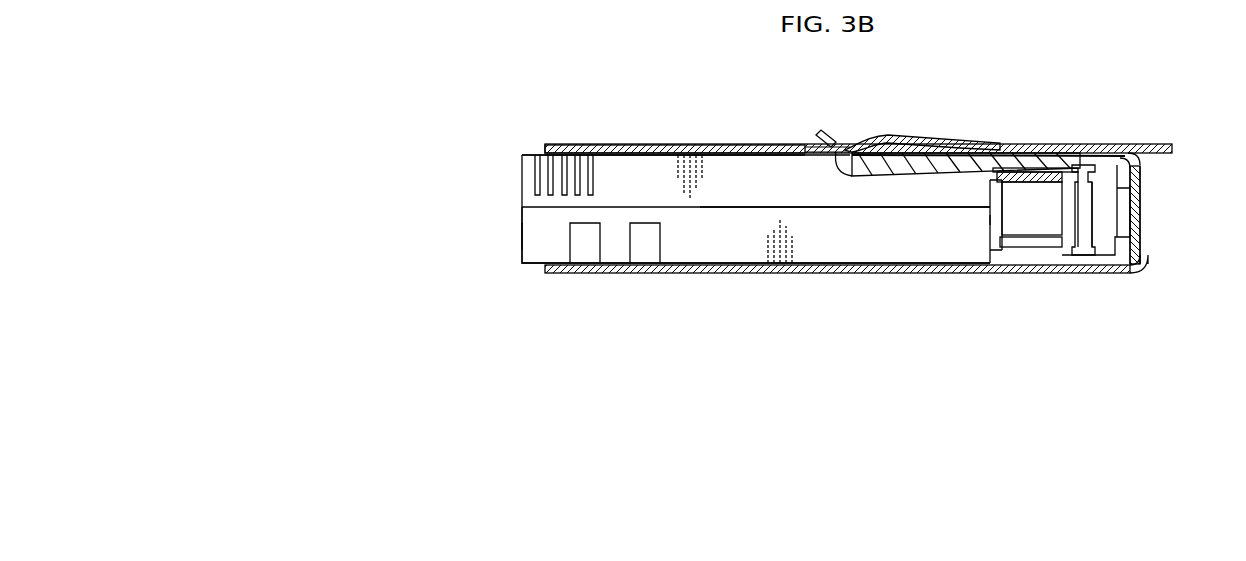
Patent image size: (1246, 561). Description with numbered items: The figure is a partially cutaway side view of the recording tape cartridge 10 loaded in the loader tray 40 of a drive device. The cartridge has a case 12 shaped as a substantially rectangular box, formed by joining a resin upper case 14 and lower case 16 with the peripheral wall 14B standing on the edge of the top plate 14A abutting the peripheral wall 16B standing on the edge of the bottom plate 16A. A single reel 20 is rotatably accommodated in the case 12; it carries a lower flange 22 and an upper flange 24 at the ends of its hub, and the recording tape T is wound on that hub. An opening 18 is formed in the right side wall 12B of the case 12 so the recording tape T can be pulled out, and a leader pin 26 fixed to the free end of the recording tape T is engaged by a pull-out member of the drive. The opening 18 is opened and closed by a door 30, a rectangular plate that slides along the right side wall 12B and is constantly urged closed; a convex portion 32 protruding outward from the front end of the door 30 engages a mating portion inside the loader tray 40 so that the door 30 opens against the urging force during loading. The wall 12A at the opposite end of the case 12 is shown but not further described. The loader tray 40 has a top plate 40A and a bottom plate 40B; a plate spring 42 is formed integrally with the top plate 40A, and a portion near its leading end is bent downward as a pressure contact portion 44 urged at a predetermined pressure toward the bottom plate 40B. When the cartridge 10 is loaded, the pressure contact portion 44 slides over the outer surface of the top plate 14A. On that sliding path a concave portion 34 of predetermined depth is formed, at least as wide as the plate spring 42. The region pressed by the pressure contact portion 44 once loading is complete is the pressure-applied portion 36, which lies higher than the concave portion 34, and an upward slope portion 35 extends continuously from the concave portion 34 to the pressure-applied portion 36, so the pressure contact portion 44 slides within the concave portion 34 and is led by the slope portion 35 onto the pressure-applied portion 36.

The recording tape cartridge 10 is at (391, 211).
The case 12 is at (520, 207).
The housing end wall 12A is at (1137, 238).
The right side wall 12B is at (824, 208).
The upper case 14 is at (532, 153).
The top plate 14A is at (628, 144).
The peripheral wall 14B is at (527, 178).
The lower case 16 is at (531, 270).
The bottom plate 16A is at (625, 268).
The peripheral wall 16B is at (527, 247).
The opening 18 is at (1103, 227).
The reel 20 is at (1036, 252).
The lower flange 22 is at (1050, 242).
The upper flange 24 is at (1052, 176).
The leader pin 26 is at (1088, 223).
The door 30 is at (993, 240).
The convex portion 32 is at (993, 218).
The concave portion 34 is at (1018, 166).
The slope portion 35 is at (947, 154).
The pressure-applied portion 36 is at (837, 148).
The loader tray 40 is at (1118, 143).
The top plate 40A is at (713, 144).
The bottom plate 40B is at (740, 276).
The plate spring 42 is at (922, 136).
The pressure contact portion 44 is at (845, 174).
The recording tape T is at (1067, 232).